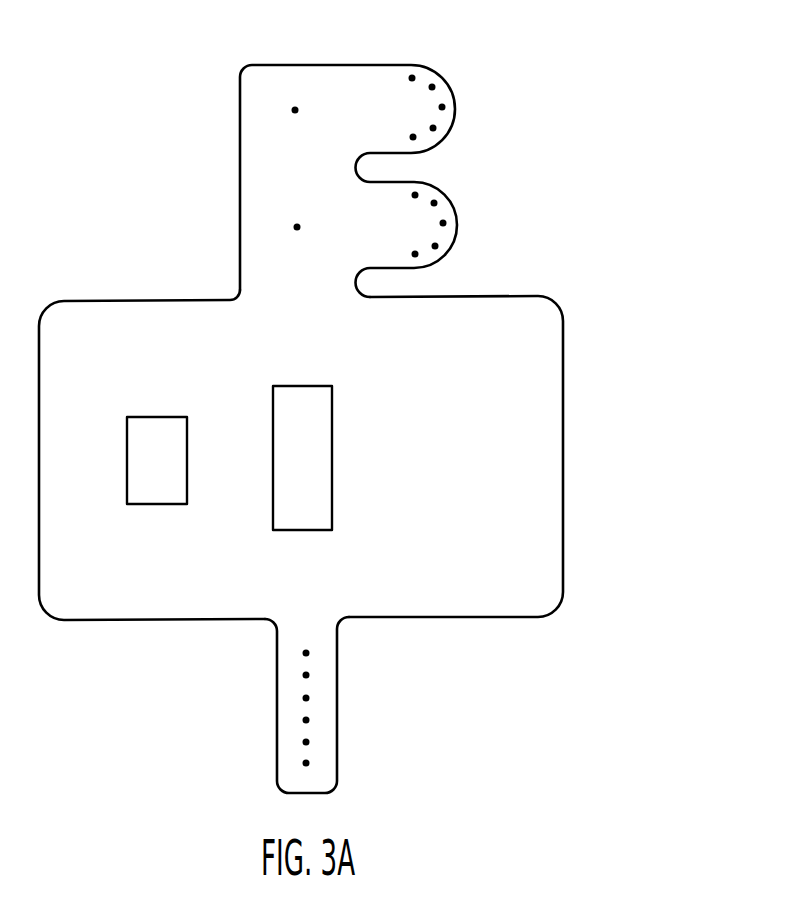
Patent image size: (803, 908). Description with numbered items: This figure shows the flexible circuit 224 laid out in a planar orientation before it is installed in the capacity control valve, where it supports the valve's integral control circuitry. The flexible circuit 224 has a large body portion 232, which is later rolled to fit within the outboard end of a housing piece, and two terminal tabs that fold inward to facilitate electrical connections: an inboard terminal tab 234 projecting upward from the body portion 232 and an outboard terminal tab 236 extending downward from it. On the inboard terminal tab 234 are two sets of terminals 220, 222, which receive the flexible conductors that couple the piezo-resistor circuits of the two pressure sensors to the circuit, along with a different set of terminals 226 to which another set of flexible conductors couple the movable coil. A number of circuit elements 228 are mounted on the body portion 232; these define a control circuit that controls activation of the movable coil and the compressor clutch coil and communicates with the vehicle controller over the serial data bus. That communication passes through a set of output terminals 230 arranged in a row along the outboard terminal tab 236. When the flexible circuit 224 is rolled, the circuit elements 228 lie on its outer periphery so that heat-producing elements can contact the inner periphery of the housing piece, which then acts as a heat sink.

The terminals 220 is at (415, 195).
The terminals 222 is at (412, 78).
The flexible circuit 224 is at (600, 255).
The terminals 226 is at (295, 110).
The circuit elements 228 is at (303, 530).
The output terminals 230 is at (306, 675).
The body portion 232 is at (550, 438).
The inboard terminal tab 234 is at (267, 95).
The outboard terminal tab 236 is at (285, 742).